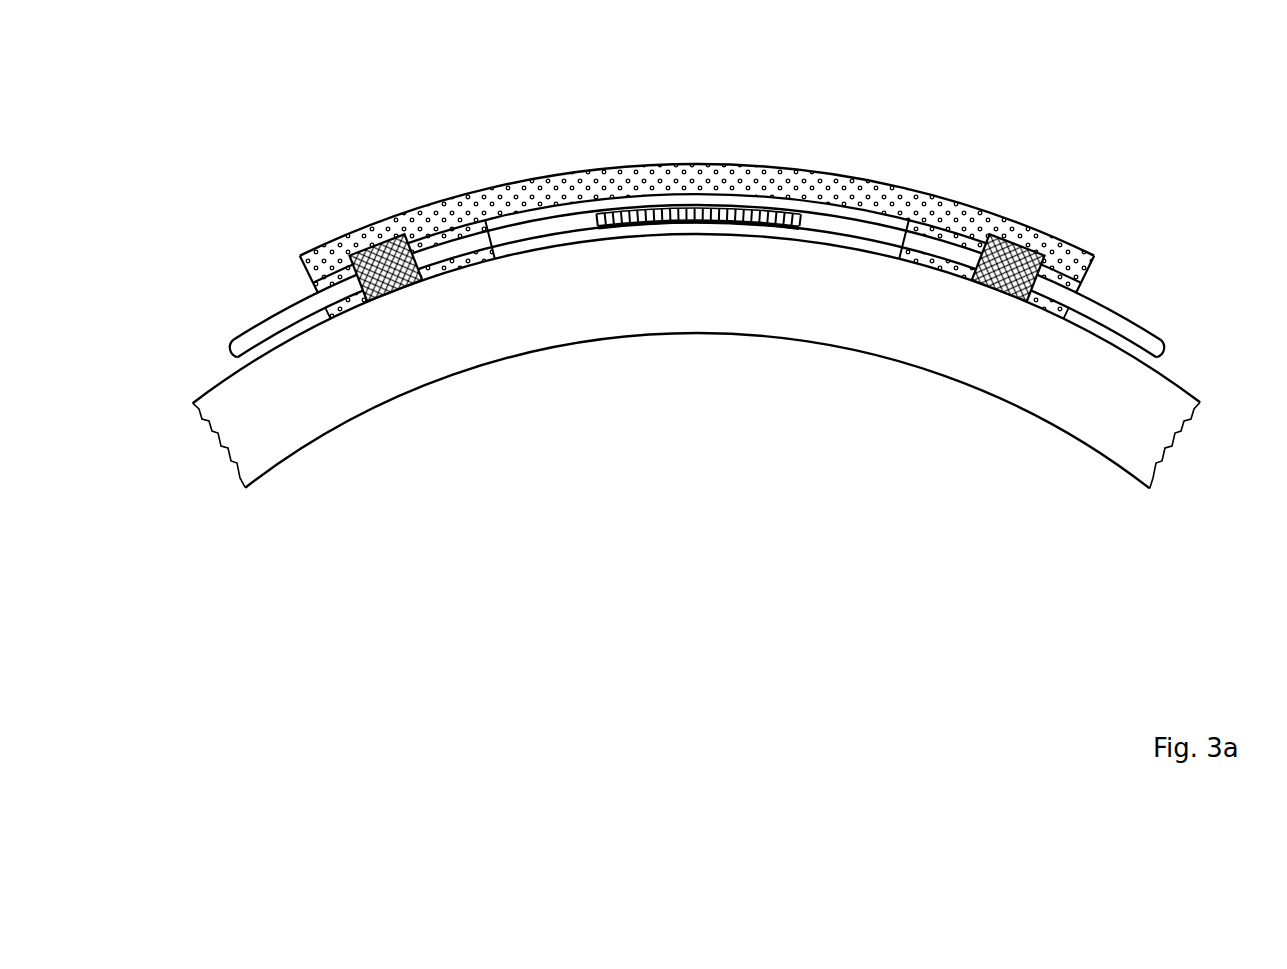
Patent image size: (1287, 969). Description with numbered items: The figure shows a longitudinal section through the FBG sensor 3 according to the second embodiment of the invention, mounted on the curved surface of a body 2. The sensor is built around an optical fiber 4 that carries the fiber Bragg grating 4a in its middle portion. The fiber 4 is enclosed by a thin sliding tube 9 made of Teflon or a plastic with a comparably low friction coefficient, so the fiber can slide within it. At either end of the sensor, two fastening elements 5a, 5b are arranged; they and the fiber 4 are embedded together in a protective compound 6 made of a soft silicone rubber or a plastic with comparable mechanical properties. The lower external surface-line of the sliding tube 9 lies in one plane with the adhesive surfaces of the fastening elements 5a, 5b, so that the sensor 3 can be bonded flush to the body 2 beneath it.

The curved wall (tire / pipe wall) 2 is at (1196, 377).
The FBG sensor 3 is at (929, 160).
The optical fiber 4 is at (1080, 273).
The sensor element 4a is at (681, 207).
The fastening element 5a is at (384, 241).
The fastening element 5b is at (1010, 247).
The protective compound 6 is at (822, 188).
The sliding tube 9 is at (909, 222).